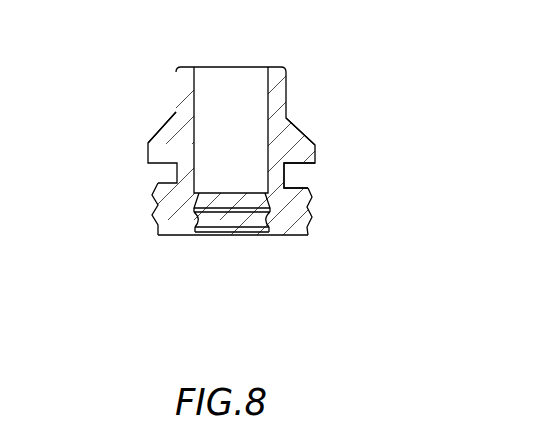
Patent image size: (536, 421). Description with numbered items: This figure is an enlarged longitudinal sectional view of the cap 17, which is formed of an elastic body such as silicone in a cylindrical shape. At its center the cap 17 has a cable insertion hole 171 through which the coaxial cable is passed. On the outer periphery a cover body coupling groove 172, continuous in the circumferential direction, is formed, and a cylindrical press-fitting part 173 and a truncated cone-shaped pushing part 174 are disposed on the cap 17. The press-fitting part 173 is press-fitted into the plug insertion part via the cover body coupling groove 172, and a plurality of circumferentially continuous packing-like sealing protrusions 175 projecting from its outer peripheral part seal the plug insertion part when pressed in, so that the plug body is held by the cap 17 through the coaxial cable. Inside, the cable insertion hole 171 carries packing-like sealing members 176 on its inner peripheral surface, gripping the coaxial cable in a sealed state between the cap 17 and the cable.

The cap 17 is at (328, 130).
The cable insertion hole 171 is at (243, 85).
The cover body coupling groove 172 is at (284, 173).
The press-fitting part 173 is at (283, 238).
The pushing part 174 is at (163, 126).
The sealing protrusions 175 is at (155, 218).
The sealing members 176 is at (252, 235).